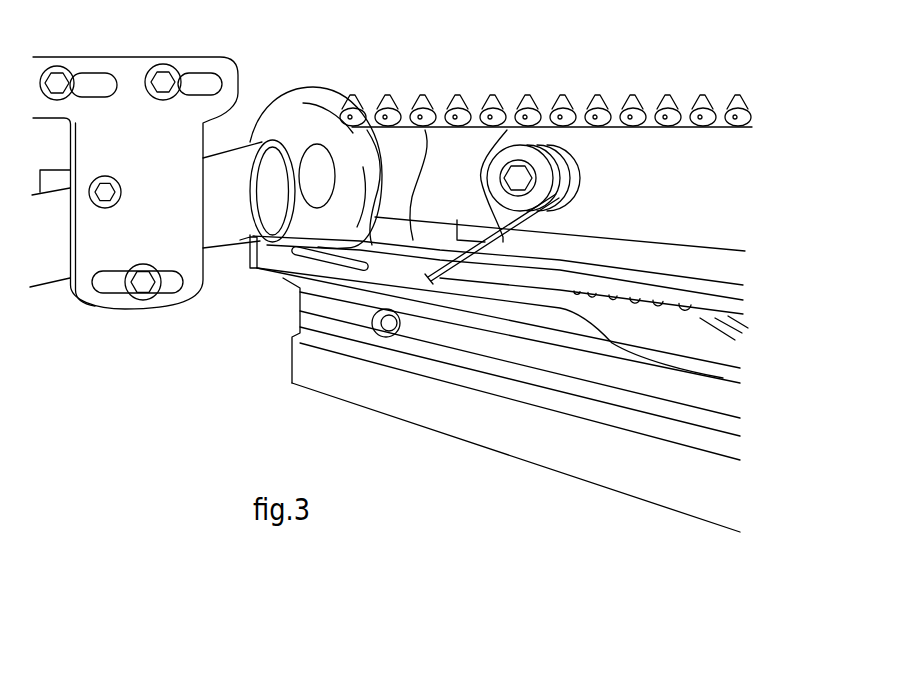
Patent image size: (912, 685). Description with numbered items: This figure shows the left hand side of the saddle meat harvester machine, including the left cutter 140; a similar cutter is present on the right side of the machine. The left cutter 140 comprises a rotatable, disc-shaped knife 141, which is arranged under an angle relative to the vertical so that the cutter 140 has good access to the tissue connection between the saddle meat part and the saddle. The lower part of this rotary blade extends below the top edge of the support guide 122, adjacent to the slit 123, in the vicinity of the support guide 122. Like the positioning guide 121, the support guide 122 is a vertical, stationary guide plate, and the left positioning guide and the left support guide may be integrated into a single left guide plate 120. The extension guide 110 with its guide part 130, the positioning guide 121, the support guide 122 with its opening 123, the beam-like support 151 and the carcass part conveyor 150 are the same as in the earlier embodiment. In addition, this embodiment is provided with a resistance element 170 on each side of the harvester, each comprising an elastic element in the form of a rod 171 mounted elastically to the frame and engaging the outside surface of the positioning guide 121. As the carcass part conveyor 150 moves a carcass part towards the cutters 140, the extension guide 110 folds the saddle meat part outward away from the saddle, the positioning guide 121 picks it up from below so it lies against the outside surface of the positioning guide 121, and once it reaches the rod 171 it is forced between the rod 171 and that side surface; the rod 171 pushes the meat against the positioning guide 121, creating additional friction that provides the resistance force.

The extension guide 110 is at (612, 278).
The left guide plate 120 is at (500, 310).
The positioning guide 121 is at (560, 322).
The support guide 122 is at (283, 278).
The slit 123 is at (257, 270).
The guide part 130 is at (425, 127).
The left cutter 140 is at (217, 158).
The disc-shaped knife 141 is at (330, 87).
The carcass part conveyor 150 is at (693, 313).
The beam-like support 151 is at (727, 363).
The resistance element 170 is at (530, 163).
The rod 171 is at (507, 130).